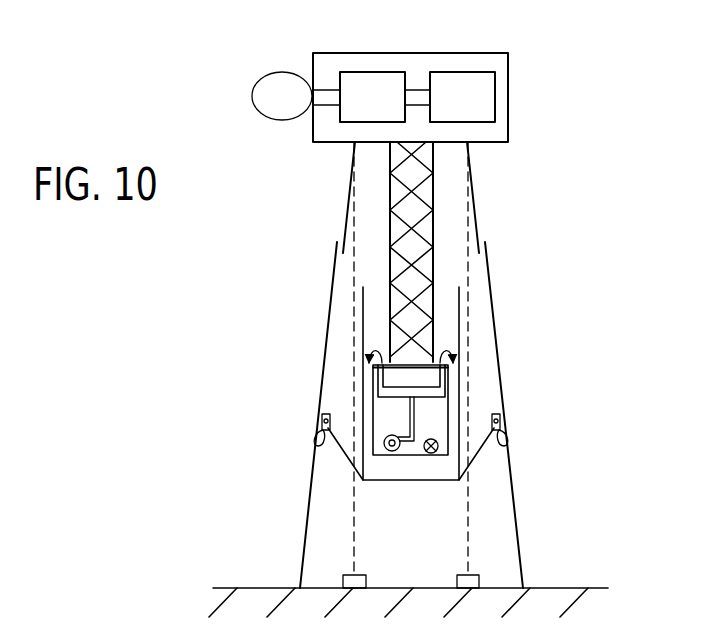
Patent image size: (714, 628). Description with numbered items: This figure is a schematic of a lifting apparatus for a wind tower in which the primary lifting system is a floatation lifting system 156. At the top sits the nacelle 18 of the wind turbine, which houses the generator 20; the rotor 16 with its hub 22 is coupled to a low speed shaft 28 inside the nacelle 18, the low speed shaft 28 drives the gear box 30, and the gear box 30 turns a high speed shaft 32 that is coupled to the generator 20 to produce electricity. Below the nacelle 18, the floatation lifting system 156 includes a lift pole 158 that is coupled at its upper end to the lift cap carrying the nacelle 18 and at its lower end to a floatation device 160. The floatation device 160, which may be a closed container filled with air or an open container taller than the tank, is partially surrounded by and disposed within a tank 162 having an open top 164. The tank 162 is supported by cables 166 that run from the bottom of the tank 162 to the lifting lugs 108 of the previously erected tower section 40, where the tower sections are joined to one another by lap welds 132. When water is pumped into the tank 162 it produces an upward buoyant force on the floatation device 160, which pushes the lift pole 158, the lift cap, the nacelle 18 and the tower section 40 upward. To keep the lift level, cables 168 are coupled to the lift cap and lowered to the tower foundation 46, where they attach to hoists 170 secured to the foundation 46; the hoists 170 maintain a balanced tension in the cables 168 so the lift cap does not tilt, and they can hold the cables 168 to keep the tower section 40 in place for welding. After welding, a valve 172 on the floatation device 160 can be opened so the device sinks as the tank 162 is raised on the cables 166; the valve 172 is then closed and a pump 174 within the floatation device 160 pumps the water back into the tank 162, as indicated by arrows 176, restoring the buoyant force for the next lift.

The rotor 16 is at (265, 72).
The nacelle 18 is at (468, 50).
The generator 20 is at (495, 95).
The hub 22 is at (278, 107).
The low speed shaft 28 is at (327, 88).
The gear box 30 is at (372, 72).
The high speed shaft 32 is at (415, 82).
The tower section 40 is at (333, 276).
The tower foundation 46 is at (578, 588).
The lifting lugs 108 is at (324, 414).
The lap welds 132 is at (318, 444).
The floatation lifting system 156 is at (476, 370).
The lift pole 158 is at (382, 187).
The floatation device 160 is at (450, 408).
The tank 162 is at (460, 337).
The open top 164 is at (447, 293).
The cables 166 is at (338, 447).
The cables 168 is at (352, 227).
The hoists 170 is at (460, 575).
The valve 172 is at (445, 454).
The pump 174 is at (392, 452).
The arrows 176 is at (459, 310).